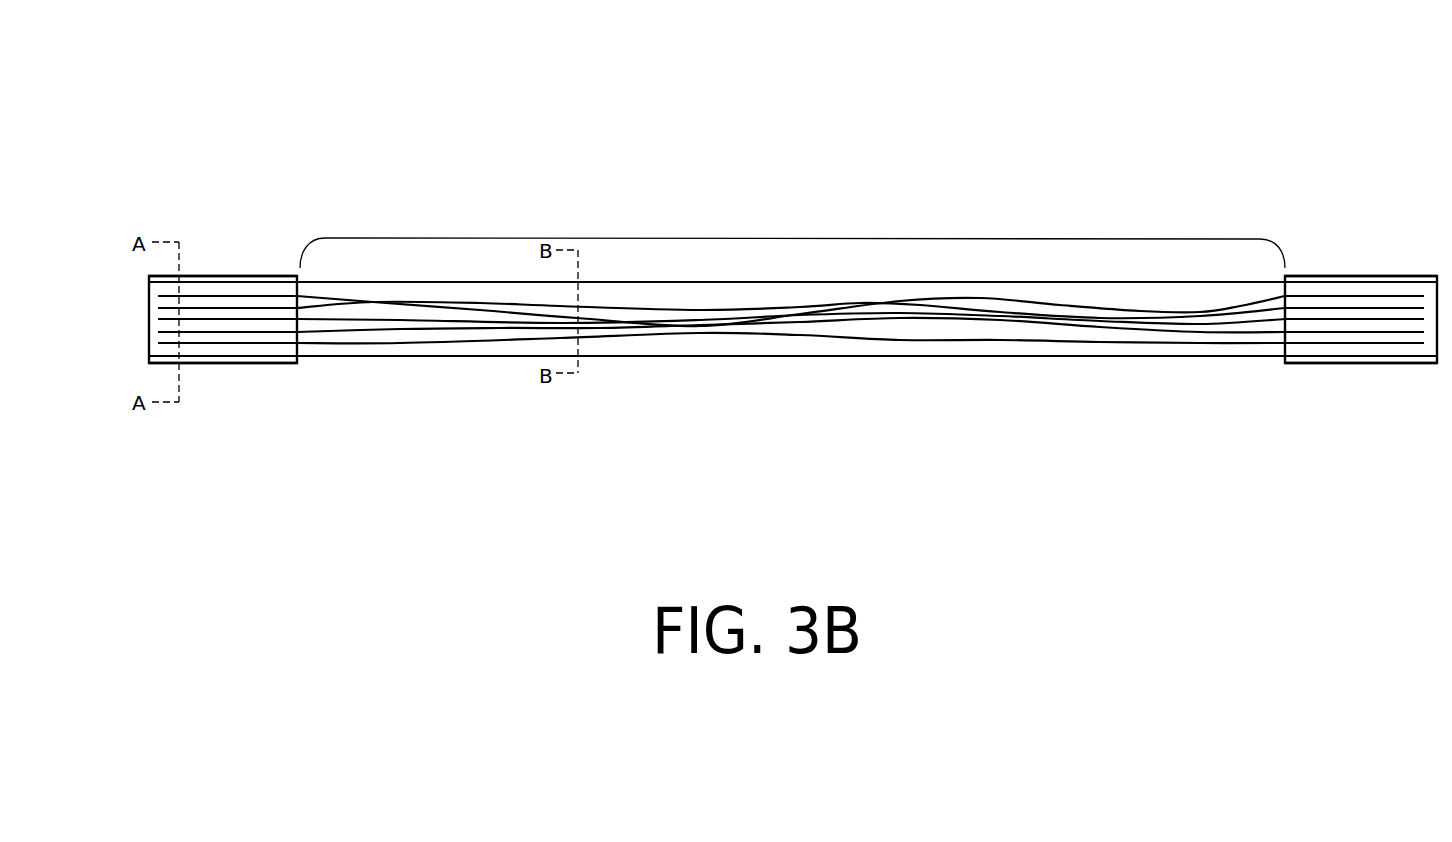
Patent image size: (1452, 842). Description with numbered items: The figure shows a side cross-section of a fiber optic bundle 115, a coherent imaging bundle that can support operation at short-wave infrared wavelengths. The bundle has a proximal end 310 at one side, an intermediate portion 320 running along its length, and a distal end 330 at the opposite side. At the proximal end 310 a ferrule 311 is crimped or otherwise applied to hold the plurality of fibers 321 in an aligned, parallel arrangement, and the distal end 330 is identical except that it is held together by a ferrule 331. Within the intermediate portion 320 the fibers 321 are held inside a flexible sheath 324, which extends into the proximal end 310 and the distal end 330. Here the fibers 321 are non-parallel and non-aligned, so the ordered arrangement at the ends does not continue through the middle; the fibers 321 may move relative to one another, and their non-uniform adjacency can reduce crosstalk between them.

The fiber optic bundle 115 is at (793, 191).
The proximal end 310 is at (232, 258).
The ferrule 311 is at (241, 358).
The intermediate portion 320 is at (793, 238).
The fiber 321 is at (791, 374).
The flexible sheath 324 is at (793, 394).
The distal end 330 is at (1353, 255).
The ferrule 331 is at (1361, 358).